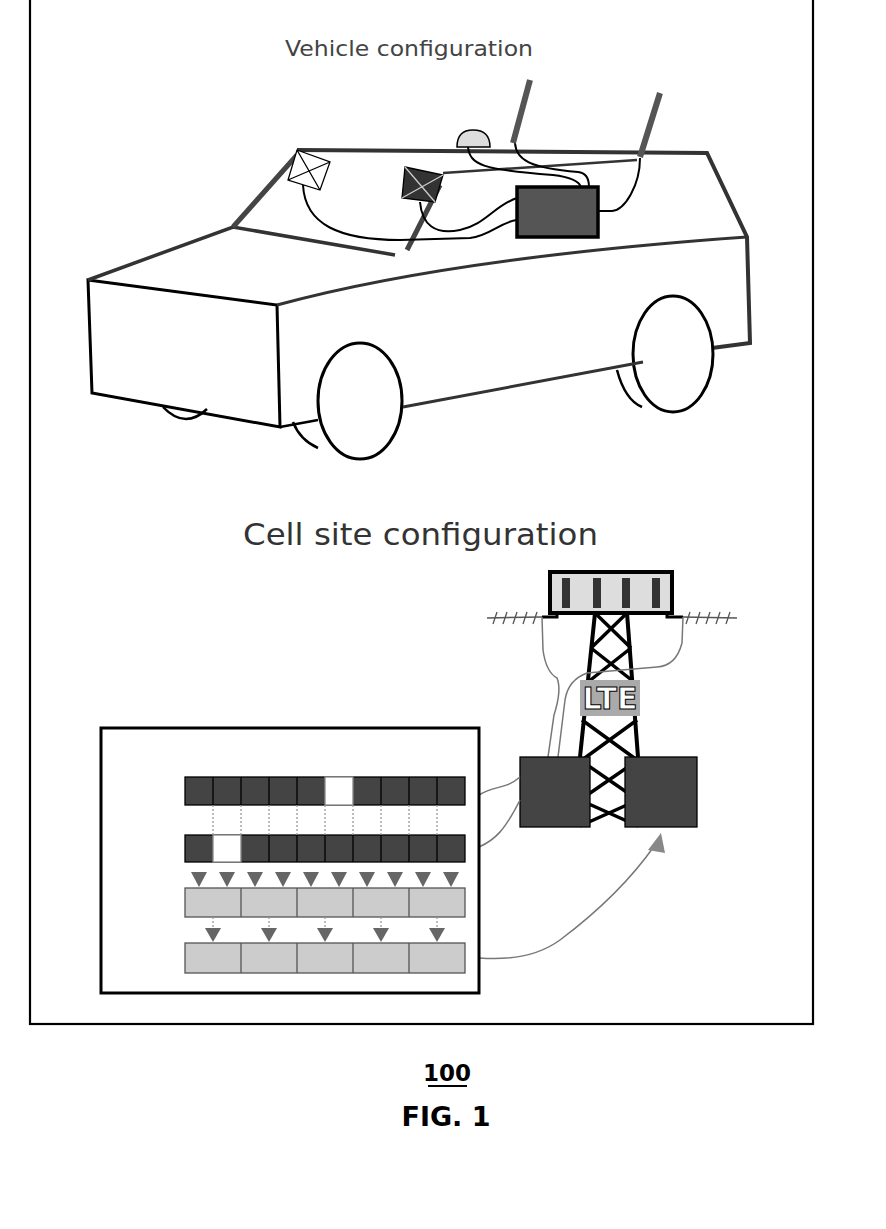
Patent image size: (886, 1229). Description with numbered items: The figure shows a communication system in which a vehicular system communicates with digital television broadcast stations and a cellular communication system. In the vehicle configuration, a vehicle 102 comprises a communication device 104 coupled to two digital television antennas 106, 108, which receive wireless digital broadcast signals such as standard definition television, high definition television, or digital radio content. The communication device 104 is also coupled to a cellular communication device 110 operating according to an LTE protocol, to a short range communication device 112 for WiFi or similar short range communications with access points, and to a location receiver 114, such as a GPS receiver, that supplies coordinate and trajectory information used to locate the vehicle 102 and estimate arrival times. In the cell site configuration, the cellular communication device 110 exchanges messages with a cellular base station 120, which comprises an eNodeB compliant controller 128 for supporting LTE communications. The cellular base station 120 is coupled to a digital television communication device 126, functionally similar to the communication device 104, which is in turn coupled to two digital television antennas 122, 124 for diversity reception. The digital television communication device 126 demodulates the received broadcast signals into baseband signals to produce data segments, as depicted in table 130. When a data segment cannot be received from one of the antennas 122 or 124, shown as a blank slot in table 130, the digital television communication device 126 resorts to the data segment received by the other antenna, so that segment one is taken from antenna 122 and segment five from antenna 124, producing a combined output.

The vehicle 102 is at (157, 248).
The communication device 104 is at (563, 237).
The digital television antenna 106 is at (530, 80).
The digital television antenna 108 is at (660, 93).
The cellular communication device 110 is at (403, 185).
The short range communication device 112 is at (293, 163).
The location receiver 114 is at (455, 133).
The cellular base station 120 is at (642, 572).
The digital television antenna 122 is at (737, 618).
The digital television antenna 124 is at (487, 618).
The digital television communication device 126 is at (553, 827).
The eNodeB compliant controller 128 is at (697, 802).
The table 130 is at (275, 728).